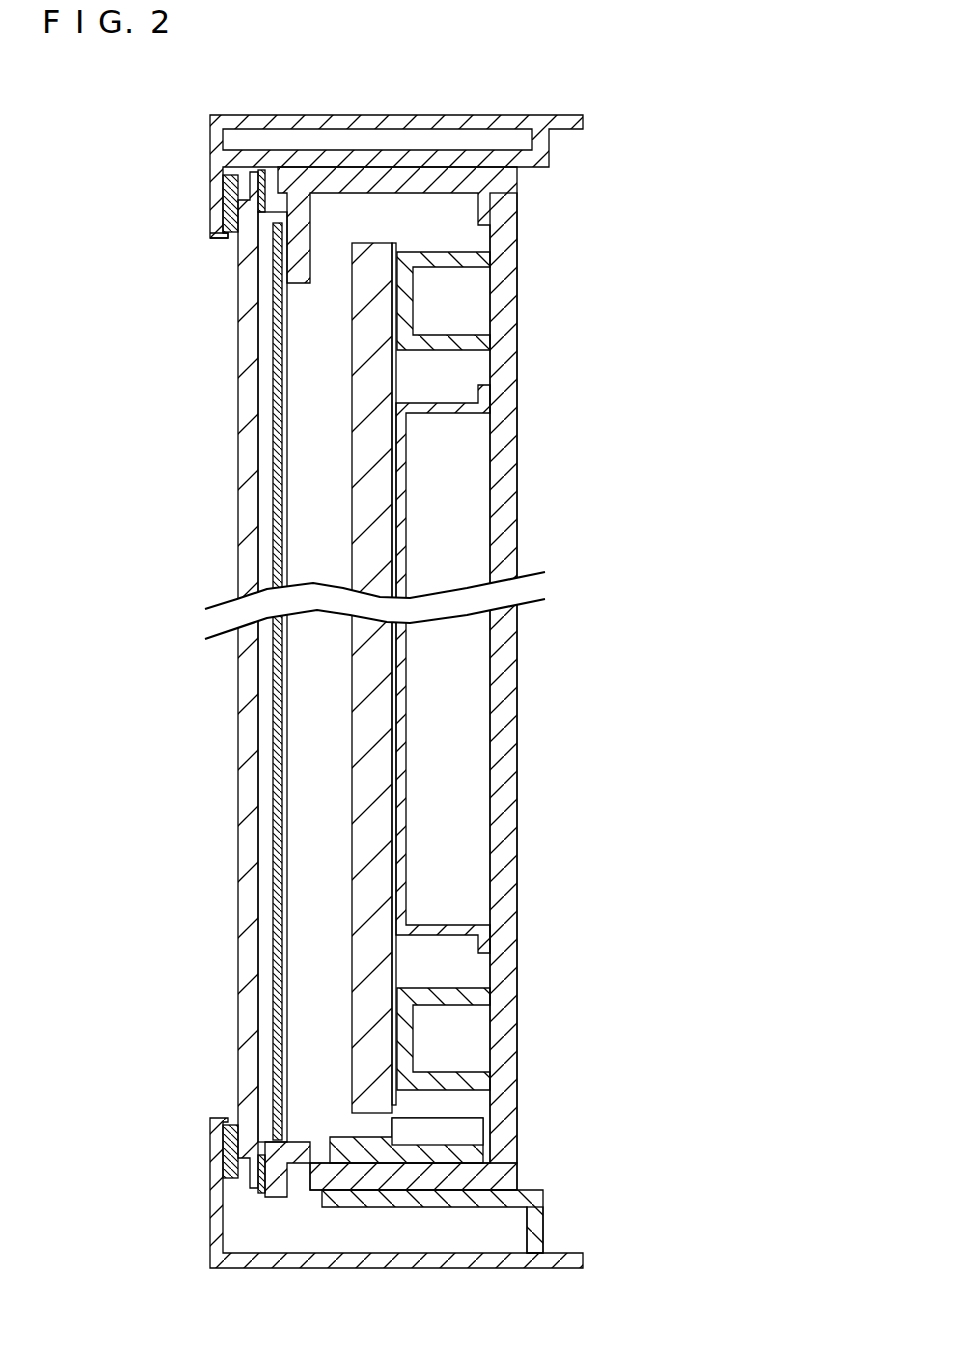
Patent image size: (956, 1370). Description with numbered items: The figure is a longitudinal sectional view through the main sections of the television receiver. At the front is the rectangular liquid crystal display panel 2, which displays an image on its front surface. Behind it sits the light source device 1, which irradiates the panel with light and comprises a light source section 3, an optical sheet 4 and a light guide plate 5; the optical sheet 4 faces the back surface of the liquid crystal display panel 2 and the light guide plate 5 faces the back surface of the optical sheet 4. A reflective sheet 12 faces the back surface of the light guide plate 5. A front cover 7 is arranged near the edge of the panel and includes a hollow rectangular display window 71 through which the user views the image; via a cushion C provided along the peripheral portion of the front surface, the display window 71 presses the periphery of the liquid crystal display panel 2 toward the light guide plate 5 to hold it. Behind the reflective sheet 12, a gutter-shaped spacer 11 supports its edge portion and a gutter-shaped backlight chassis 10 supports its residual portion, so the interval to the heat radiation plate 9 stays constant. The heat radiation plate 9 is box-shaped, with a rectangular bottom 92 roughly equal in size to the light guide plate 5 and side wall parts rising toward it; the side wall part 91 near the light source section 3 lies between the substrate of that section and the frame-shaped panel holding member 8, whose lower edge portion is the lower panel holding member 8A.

The light source device 1 is at (150, 1017).
The liquid crystal display panel 2 is at (245, 790).
The light source section 3 is at (358, 1127).
The optical sheet 4 is at (285, 1047).
The light guide plate 5 is at (363, 1090).
The front cover 7 is at (297, 120).
The display window 71 is at (222, 237).
The panel holding member 8 is at (479, 1197).
The lower panel holding member 8A is at (537, 1221).
The heat radiation plate 9 is at (429, 738).
The side wall part 91 is at (417, 1180).
The bottom 92 is at (472, 709).
The backlight chassis 10 is at (467, 421).
The spacer 11 is at (463, 340).
The reflective sheet 12 is at (398, 373).
The cushion C is at (231, 233).